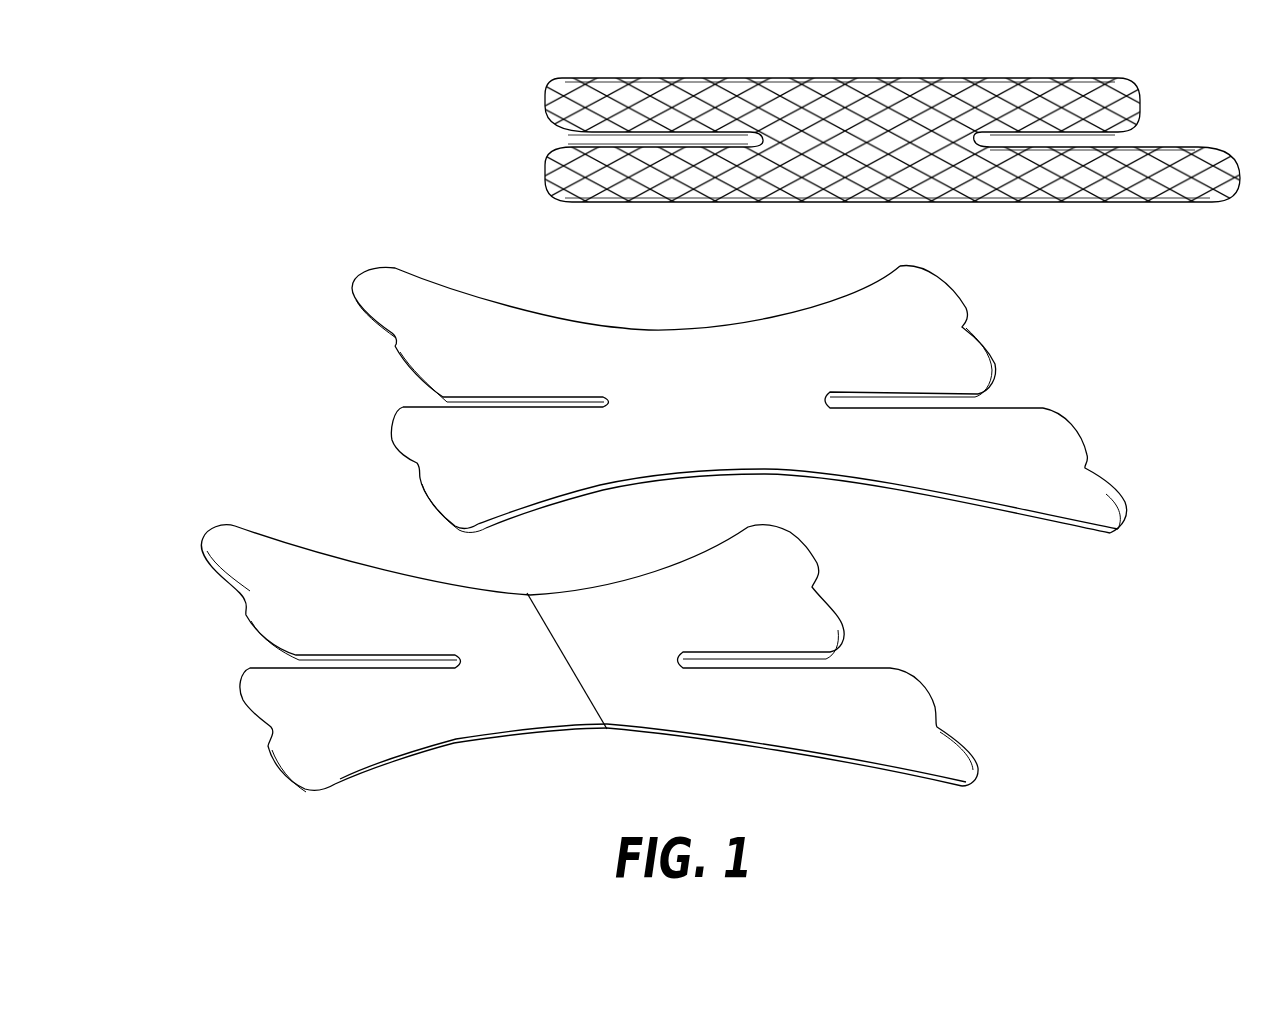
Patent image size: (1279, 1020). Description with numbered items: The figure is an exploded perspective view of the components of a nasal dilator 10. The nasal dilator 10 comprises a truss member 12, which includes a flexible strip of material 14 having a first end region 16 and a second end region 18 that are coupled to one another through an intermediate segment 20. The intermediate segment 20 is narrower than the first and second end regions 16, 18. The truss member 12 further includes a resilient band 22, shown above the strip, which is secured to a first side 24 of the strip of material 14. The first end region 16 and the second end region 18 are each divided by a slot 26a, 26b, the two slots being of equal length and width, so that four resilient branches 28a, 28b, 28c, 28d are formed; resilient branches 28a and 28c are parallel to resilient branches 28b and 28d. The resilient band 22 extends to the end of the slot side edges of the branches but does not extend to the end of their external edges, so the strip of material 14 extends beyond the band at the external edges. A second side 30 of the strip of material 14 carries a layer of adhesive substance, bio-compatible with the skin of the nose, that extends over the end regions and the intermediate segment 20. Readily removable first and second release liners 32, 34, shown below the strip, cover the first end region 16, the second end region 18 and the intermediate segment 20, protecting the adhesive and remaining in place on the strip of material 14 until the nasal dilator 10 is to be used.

The nasal dilator 10 is at (329, 147).
The truss member 12 is at (418, 228).
The flexible strip of material 14 is at (623, 330).
The first end region 16 is at (533, 504).
The second end region 18 is at (998, 503).
The intermediate segment 20 is at (724, 477).
The resilient band 22 is at (1181, 122).
The first side 24 is at (755, 348).
The slot 26a is at (420, 398).
The slot 26b is at (1000, 397).
The resilient branch 28a is at (405, 292).
The resilient branch 28b is at (427, 480).
The resilient branch 28c is at (948, 285).
The resilient branch 28d is at (1098, 522).
The second side 30 is at (887, 490).
The first release liner 32 is at (454, 764).
The second release liner 34 is at (821, 764).